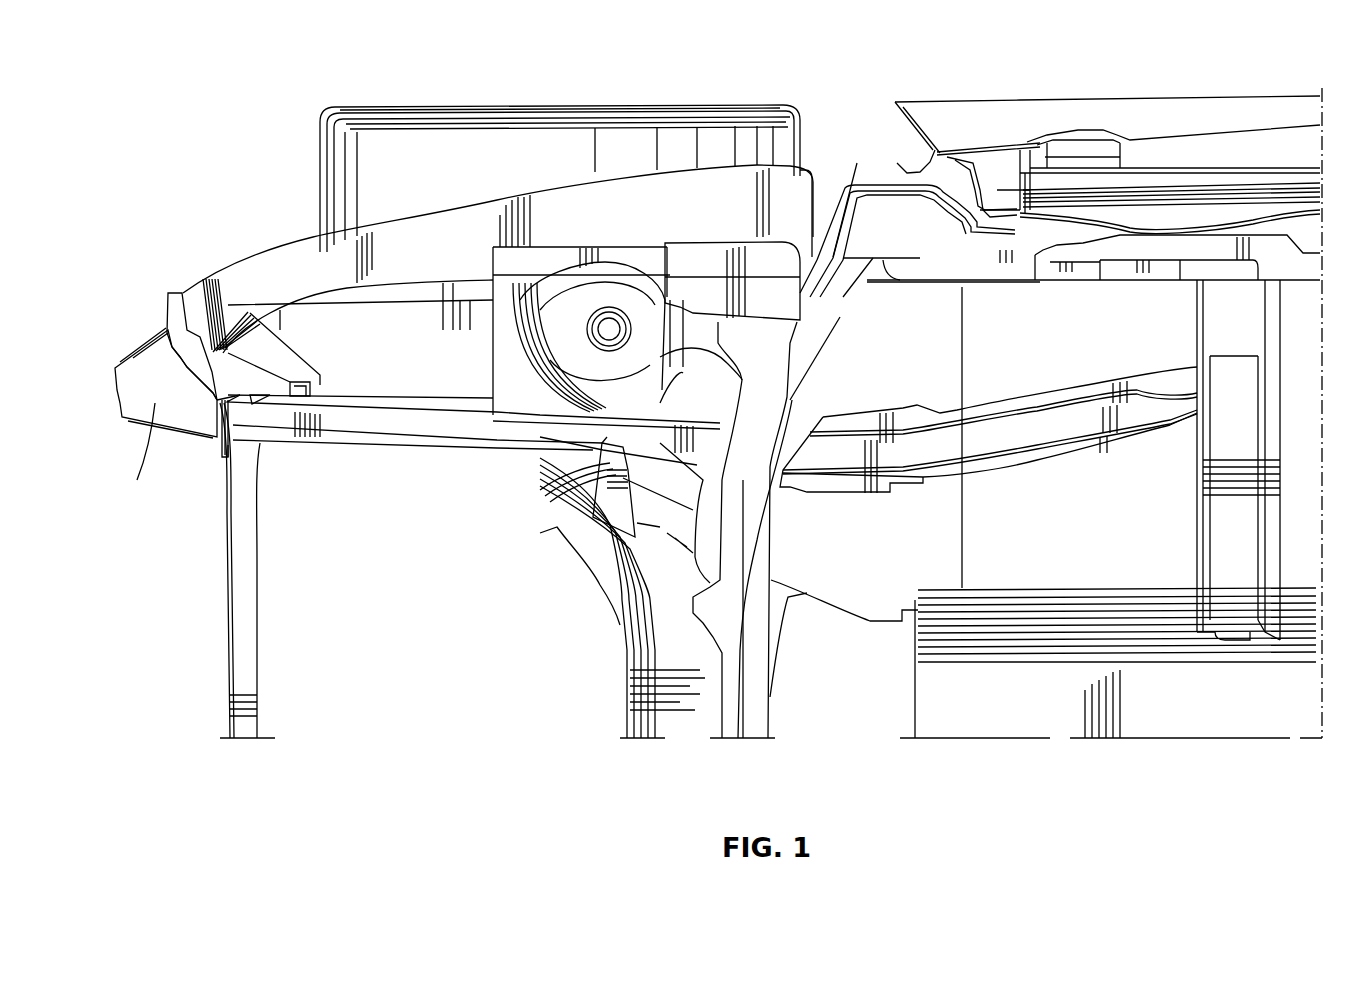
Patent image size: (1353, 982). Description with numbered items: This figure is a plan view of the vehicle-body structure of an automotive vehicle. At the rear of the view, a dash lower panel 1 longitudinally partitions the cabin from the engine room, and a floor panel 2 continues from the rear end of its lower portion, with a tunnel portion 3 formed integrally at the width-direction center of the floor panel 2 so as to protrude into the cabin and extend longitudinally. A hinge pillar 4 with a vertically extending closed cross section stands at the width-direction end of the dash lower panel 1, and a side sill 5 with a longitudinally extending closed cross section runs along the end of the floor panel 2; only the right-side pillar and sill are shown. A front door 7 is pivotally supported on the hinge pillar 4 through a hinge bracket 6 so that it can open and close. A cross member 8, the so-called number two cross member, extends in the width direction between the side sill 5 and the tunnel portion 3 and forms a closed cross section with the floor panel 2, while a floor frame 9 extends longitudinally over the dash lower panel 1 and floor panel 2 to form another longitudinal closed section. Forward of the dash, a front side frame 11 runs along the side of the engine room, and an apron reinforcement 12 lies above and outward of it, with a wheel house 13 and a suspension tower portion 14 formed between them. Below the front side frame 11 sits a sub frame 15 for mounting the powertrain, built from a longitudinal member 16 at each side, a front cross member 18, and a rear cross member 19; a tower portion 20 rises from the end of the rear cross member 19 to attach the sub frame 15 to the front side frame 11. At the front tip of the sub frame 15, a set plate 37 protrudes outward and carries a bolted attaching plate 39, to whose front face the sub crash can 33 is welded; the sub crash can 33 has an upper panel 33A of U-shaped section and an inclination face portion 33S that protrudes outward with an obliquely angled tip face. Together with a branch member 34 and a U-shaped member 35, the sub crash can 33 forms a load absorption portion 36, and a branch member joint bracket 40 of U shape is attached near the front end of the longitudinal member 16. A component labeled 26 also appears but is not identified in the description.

The dash lower panel 1 is at (888, 552).
The floor panel 2 is at (1107, 526).
The tunnel portion 3 is at (1044, 703).
The hinge pillar 4 is at (867, 168).
The side sill 5 is at (1047, 294).
The hinge bracket 6 is at (907, 157).
The front door 7 is at (1017, 89).
The cross member 8 is at (1250, 433).
The floor frame 9 is at (943, 403).
The front side frame 11 is at (410, 423).
The apron reinforcement 12 is at (443, 222).
The wheel house 13 is at (510, 317).
The suspension tower portion 14 is at (628, 262).
The sub frame 15 is at (792, 653).
The longitudinal member 16 is at (455, 432).
The front cross member 18 is at (250, 598).
The rear cross member 19 is at (627, 647).
The tower portion 20 is at (580, 490).
The cowl box 26 is at (320, 190).
The sub crash can 33 is at (131, 436).
The inclination face portion 33S is at (138, 355).
The upper panel 33A is at (152, 455).
The branch member 34 is at (283, 347).
The U-shaped member 35 is at (243, 367).
The load absorption portion 36 is at (156, 303).
The set plate 37 is at (228, 445).
The attaching plate 39 is at (220, 408).
The branch member joint bracket 40 is at (305, 380).